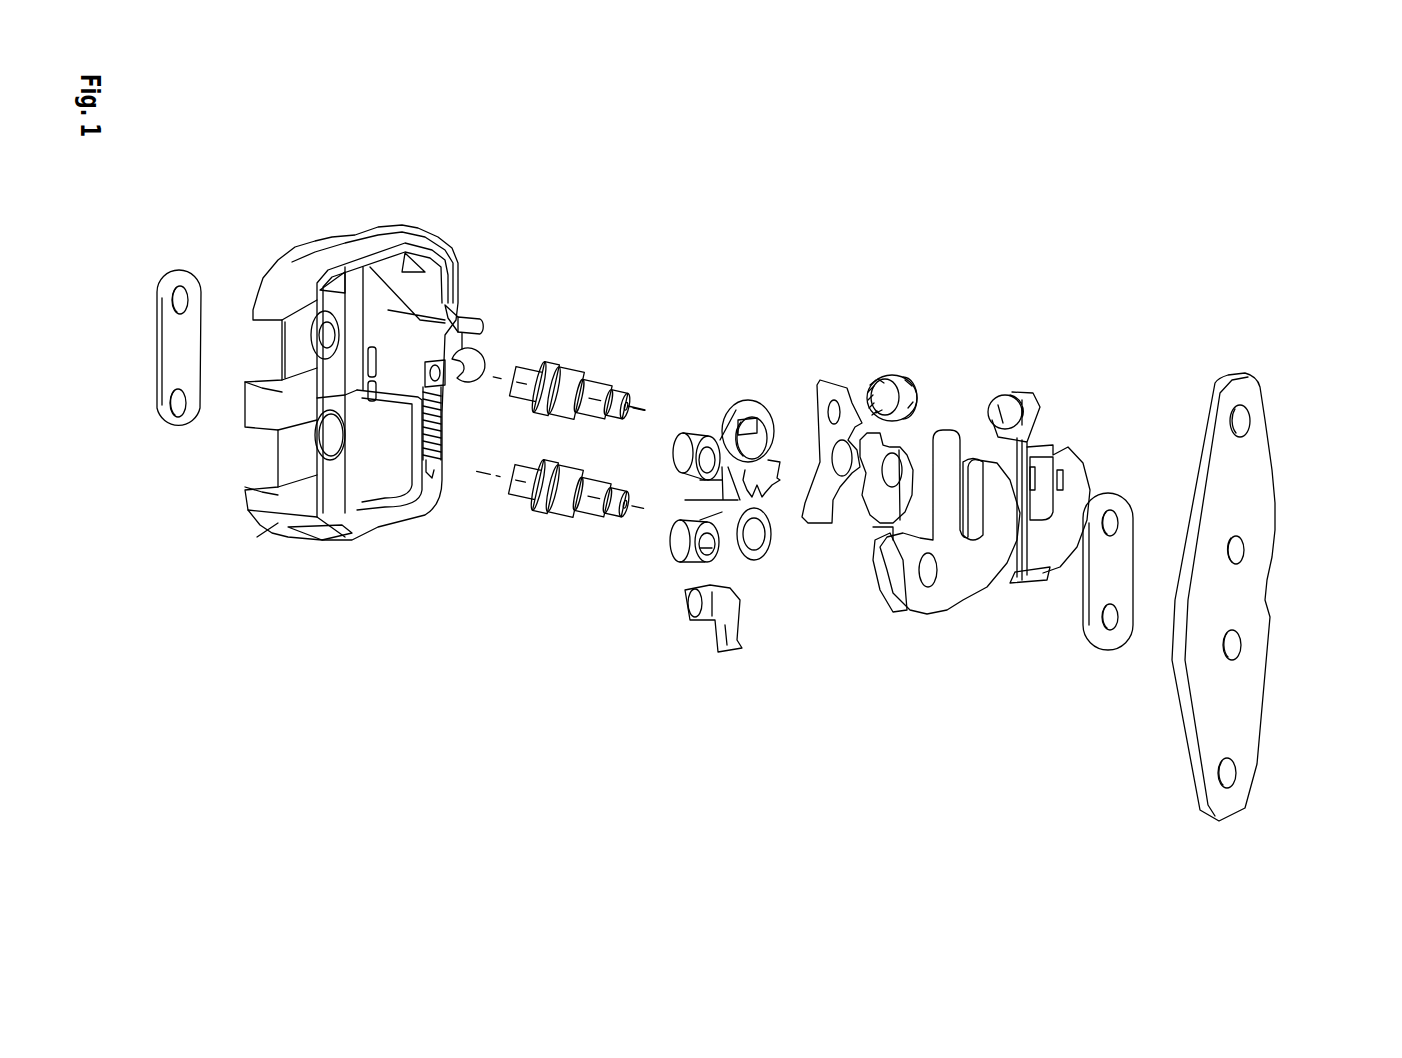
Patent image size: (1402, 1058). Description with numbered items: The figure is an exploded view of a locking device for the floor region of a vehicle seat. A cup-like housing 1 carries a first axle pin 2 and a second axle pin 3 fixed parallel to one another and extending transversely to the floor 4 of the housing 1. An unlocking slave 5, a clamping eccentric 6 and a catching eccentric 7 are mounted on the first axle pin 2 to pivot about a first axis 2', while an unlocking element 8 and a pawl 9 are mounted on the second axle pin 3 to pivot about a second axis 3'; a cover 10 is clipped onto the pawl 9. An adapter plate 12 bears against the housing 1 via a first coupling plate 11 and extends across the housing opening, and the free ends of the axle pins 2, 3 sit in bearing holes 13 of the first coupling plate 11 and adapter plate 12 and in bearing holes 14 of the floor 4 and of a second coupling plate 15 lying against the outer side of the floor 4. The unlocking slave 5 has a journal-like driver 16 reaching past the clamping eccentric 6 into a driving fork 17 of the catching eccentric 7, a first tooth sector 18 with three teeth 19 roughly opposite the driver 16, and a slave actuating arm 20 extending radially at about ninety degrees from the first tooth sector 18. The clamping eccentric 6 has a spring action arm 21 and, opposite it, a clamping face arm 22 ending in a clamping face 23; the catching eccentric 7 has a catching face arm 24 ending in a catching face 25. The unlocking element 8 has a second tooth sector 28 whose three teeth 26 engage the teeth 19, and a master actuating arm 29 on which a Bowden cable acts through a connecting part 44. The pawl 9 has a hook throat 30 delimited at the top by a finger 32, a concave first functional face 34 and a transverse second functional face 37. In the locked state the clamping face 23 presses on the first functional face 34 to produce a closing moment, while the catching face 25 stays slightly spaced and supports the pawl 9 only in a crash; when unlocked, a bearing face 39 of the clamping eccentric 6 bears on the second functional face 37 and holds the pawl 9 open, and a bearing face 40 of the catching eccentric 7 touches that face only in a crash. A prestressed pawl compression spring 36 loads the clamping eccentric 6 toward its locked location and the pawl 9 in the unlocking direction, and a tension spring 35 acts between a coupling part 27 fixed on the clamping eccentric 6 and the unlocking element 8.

The housing 1 is at (325, 242).
The first axle pin 2 is at (569, 327).
The first axis 2' is at (652, 307).
The second axle pin 3 is at (560, 537).
The second axis 3' is at (477, 516).
The floor 4 is at (373, 470).
The unlocking slave 5 is at (741, 372).
The clamping eccentric 6 is at (841, 359).
The catching eccentric 7 is at (862, 535).
The unlocking element 8 is at (667, 576).
The pawl 9 is at (929, 541).
The cover 10 is at (1092, 414).
The first coupling plate 11 is at (1141, 452).
The adapter plate 12 is at (1271, 354).
The bearing holes 13 is at (1113, 520).
The bearing holes 14 is at (181, 290).
The second coupling plate 15 is at (150, 271).
The driver 16 is at (752, 400).
The driving fork 17 is at (882, 428).
The first tooth sector 18 is at (778, 462).
The teeth 19 is at (798, 424).
The slave actuating arm 20 is at (716, 425).
The spring action arm 21 is at (826, 376).
The clamping face arm 22 is at (823, 540).
The clamping face 23 is at (818, 522).
The catching face arm 24 is at (856, 502).
The catching face 25 is at (858, 546).
The teeth 26 is at (776, 490).
The coupling part 27 is at (479, 302).
The second tooth sector 28 is at (700, 520).
The master actuating arm 29 is at (720, 552).
The hook throat 30 is at (975, 427).
The finger 32 is at (949, 430).
The first functional face 34 is at (903, 540).
The tension spring 35 is at (432, 388).
The pawl compression spring 36 is at (905, 372).
The second functional face 37 is at (883, 560).
The bearing face 39 is at (830, 465).
The bearing face 40 is at (879, 552).
The connecting part 44 is at (698, 625).